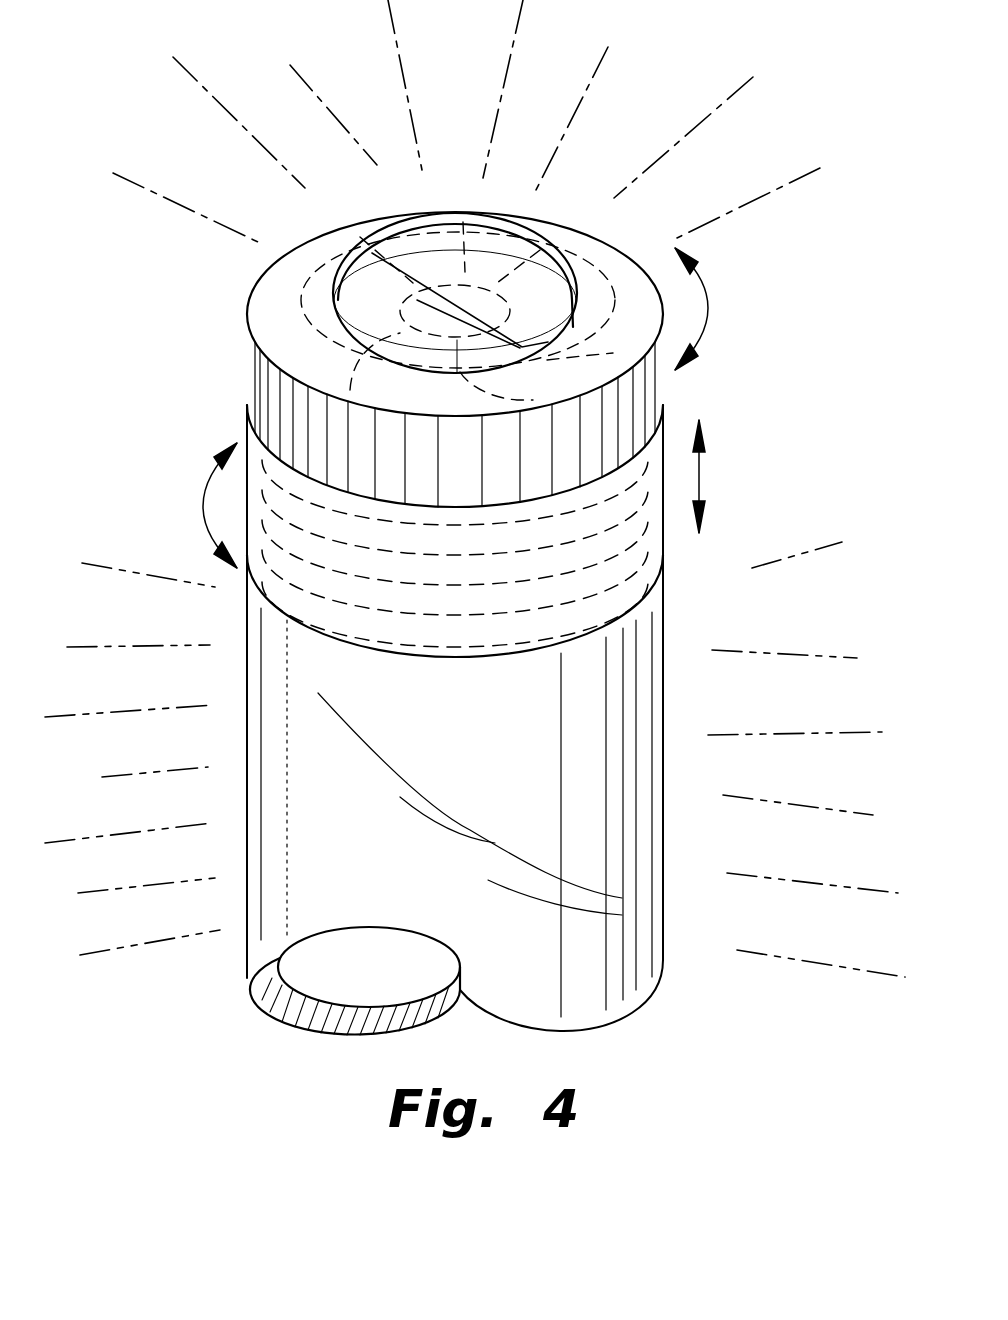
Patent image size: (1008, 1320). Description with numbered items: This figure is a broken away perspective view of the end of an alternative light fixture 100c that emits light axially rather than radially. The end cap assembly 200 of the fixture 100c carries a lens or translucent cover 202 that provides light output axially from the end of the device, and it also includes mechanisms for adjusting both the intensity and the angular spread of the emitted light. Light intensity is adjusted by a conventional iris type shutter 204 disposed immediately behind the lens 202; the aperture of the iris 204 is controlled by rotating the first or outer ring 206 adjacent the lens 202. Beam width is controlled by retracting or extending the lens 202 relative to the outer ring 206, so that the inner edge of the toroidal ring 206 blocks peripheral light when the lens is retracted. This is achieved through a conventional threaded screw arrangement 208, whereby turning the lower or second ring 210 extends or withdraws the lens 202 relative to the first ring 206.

The fixture 100c is at (210, 1023).
The end cap assembly 200 is at (247, 413).
The lens 202 is at (388, 232).
The iris type shutter 204 is at (545, 238).
The first or outer ring 206 is at (247, 323).
The threaded screw arrangement 208 is at (262, 590).
The lower or second ring 210 is at (663, 532).